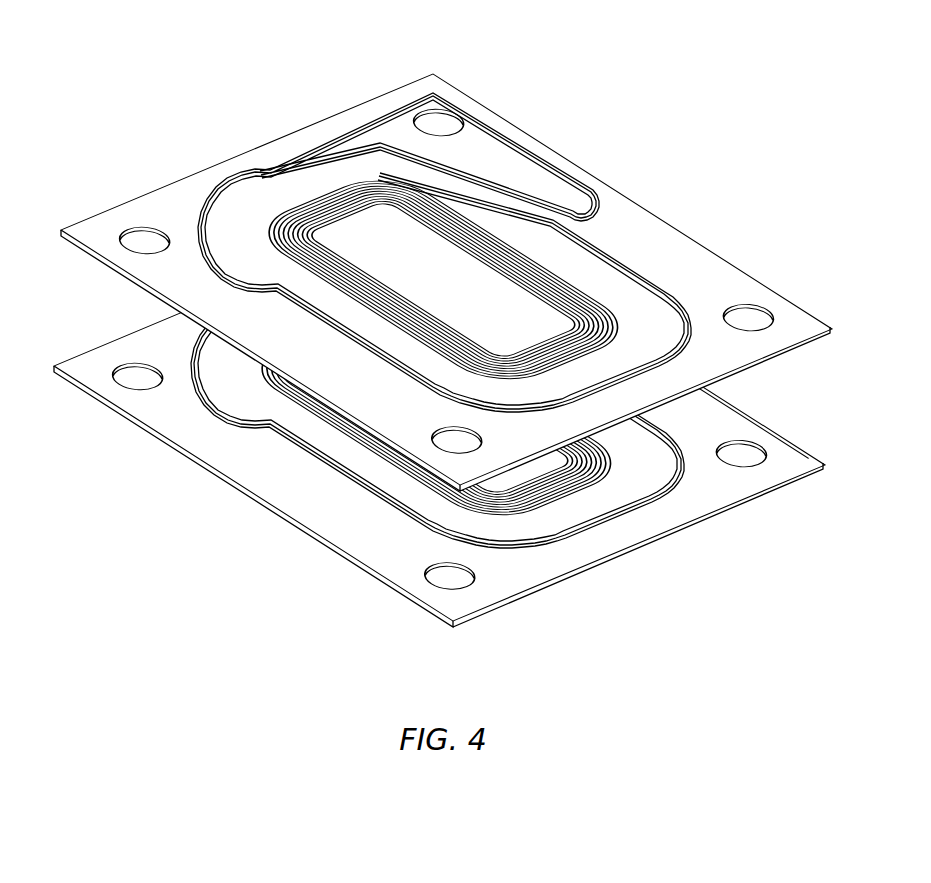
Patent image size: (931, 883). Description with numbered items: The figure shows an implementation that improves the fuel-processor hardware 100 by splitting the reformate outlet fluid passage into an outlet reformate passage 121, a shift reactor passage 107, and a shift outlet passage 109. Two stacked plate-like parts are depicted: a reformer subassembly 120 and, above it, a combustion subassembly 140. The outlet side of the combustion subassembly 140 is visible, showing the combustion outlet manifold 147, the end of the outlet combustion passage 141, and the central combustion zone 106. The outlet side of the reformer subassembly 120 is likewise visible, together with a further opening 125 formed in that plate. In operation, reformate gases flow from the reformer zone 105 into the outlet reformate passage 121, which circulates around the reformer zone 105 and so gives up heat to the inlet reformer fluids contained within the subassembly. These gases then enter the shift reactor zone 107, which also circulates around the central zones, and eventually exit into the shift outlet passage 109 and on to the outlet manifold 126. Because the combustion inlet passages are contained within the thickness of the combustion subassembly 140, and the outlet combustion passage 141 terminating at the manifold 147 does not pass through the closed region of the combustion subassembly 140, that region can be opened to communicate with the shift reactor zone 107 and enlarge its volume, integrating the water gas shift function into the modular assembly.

The hardware 100 is at (735, 540).
The reformer zone 105 is at (547, 466).
The combustion zone 106 is at (363, 225).
The shift reactor zone 107 is at (318, 447).
The shift outlet passage 109 is at (338, 483).
The reformer subassembly 120 is at (342, 573).
The outlet reformate passage 121 is at (523, 505).
The mounting hole 125 is at (135, 377).
The outlet manifold 126 is at (750, 457).
The combustion subassembly 140 is at (722, 255).
The outlet combustion passage 141 is at (387, 125).
The combustion outlet manifold 147 is at (443, 120).